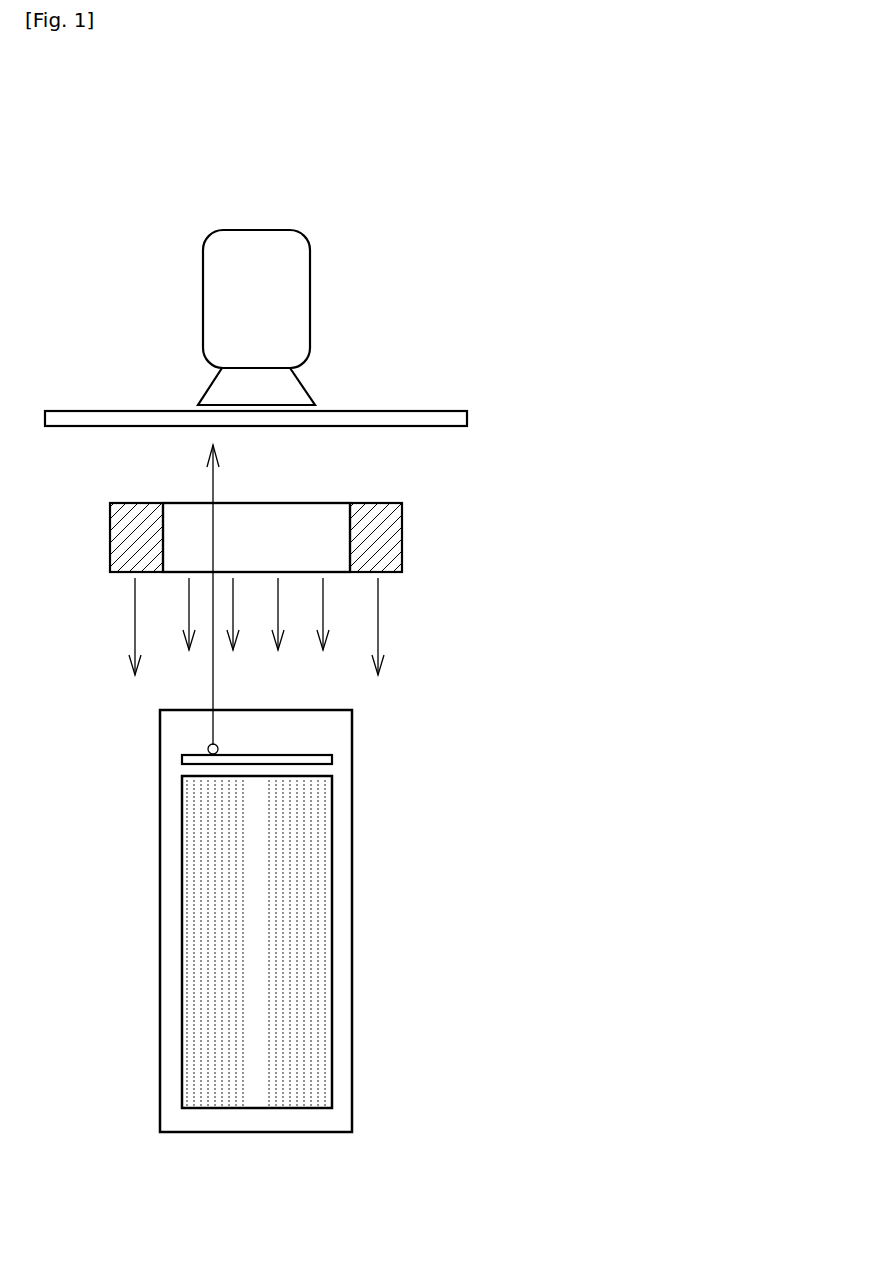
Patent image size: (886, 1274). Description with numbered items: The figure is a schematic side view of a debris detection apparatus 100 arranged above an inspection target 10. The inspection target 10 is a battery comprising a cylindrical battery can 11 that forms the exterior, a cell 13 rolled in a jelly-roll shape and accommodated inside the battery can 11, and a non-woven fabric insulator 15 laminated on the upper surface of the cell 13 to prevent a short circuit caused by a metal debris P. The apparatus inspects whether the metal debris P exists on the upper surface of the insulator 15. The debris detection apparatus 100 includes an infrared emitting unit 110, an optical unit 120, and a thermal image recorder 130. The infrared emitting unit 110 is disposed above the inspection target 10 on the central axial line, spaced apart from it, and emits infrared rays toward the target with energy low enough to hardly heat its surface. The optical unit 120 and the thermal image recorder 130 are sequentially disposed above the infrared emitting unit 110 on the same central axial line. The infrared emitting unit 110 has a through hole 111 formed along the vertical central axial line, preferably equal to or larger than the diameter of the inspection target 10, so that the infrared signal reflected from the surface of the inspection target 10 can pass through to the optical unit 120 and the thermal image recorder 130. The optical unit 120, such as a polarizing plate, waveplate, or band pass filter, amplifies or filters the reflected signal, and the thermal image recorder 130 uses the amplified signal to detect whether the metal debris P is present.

The debris detection apparatus 100 is at (447, 291).
The thermal image recorder 130 is at (297, 217).
The optical unit 120 is at (467, 403).
The infrared emitting unit 110 is at (417, 527).
The through hole 111 is at (314, 528).
The inspection target 10 is at (293, 919).
The cylindrical battery can 11 is at (352, 992).
The cell 13 is at (305, 843).
The non-woven fabric insulator 15 is at (300, 755).
The metal debris P is at (208, 747).